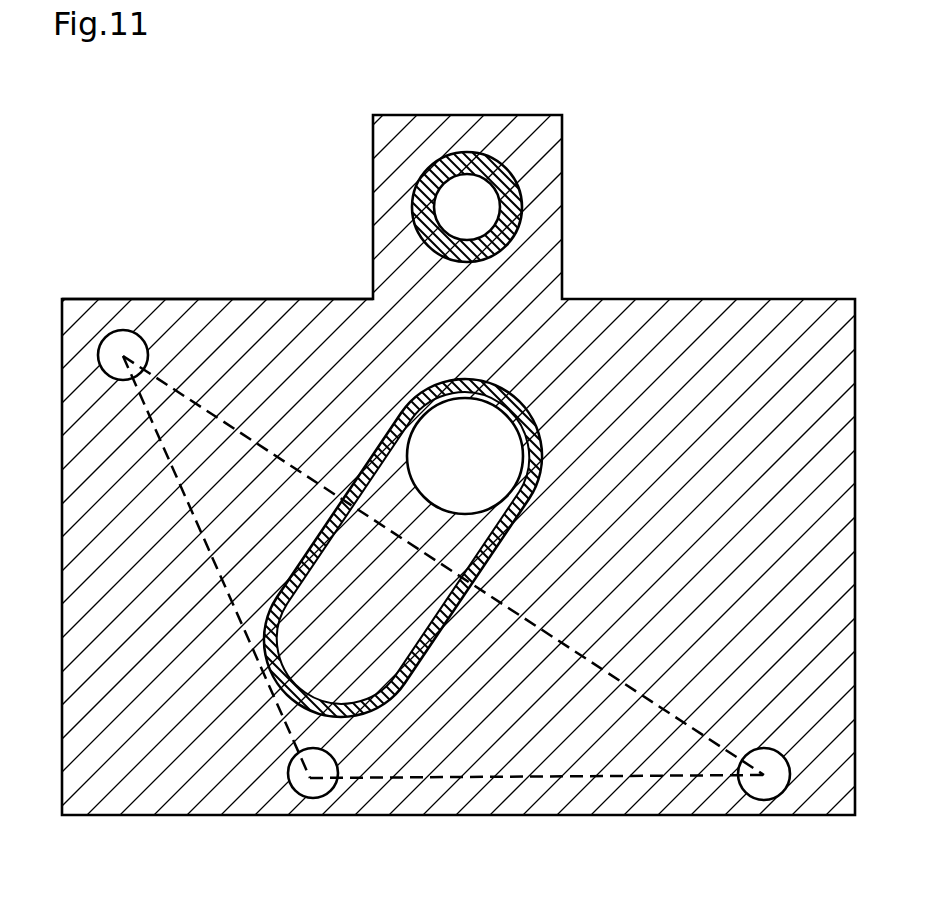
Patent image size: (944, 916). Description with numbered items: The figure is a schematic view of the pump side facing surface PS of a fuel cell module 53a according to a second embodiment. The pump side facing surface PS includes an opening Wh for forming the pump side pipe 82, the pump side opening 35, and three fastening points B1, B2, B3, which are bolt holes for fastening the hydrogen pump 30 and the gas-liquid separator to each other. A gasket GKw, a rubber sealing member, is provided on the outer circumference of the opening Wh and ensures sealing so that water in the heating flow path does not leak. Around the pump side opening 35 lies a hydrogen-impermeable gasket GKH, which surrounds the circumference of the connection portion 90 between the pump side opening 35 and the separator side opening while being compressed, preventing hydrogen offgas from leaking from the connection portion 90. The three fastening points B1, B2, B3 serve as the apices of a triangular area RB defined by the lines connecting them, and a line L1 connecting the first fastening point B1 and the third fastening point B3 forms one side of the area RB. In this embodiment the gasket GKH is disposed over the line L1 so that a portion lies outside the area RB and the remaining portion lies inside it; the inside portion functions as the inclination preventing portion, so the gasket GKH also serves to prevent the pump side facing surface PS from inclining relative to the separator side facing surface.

The fuel cell module 53a is at (127, 170).
The hydrogen pump 30 is at (210, 217).
The pump side pipe 82 is at (458, 198).
The opening Wh is at (467, 207).
The gasket GKw is at (522, 214).
The pump side facing surface PS is at (219, 299).
The first fastening point B1 is at (123, 330).
The second fastening point B2 is at (312, 798).
The third fastening point B3 is at (760, 800).
The gasket GKH is at (432, 392).
The pump side opening 35 is at (507, 470).
The connection portion 90 is at (465, 456).
The line L1 is at (607, 643).
The area RB is at (557, 780).